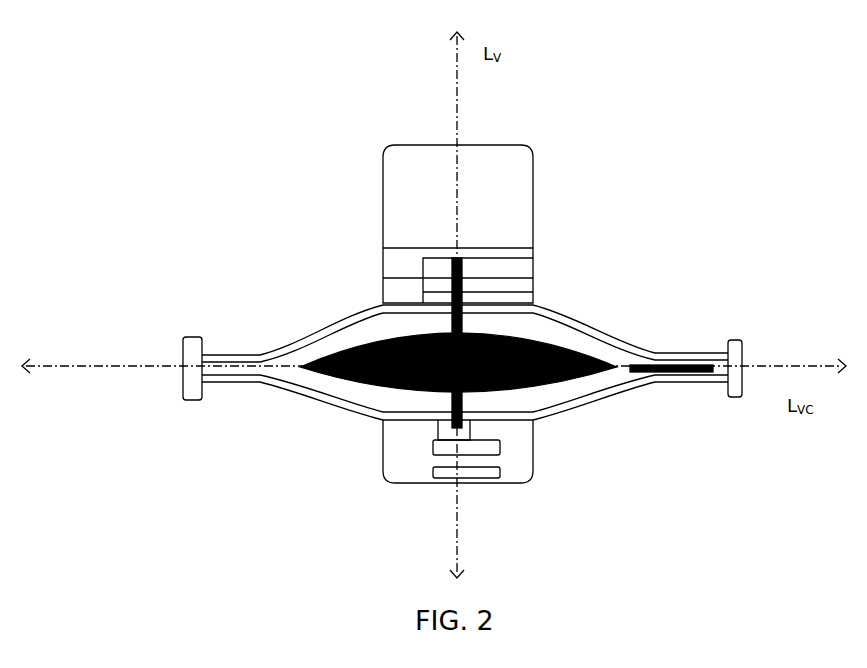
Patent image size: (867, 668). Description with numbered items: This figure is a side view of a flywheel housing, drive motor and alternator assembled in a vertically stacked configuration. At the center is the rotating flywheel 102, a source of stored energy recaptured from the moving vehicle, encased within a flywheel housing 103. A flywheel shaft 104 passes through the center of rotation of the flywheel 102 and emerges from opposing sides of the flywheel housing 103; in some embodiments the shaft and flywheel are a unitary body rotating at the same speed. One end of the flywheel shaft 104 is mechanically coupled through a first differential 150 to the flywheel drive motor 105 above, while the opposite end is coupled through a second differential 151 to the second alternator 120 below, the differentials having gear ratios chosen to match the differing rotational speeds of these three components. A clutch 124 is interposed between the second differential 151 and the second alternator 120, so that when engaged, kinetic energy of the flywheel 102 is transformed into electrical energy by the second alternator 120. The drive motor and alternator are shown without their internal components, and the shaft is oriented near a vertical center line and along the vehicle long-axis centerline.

The flywheel drive motor 105 is at (383, 190).
The first differential 150 is at (533, 278).
The flywheel 102 is at (357, 347).
The flywheel shaft 104 is at (547, 317).
The flywheel housing 103 is at (282, 385).
The second alternator 120 is at (533, 455).
The second differential 151 is at (438, 428).
The clutch 124 is at (503, 476).